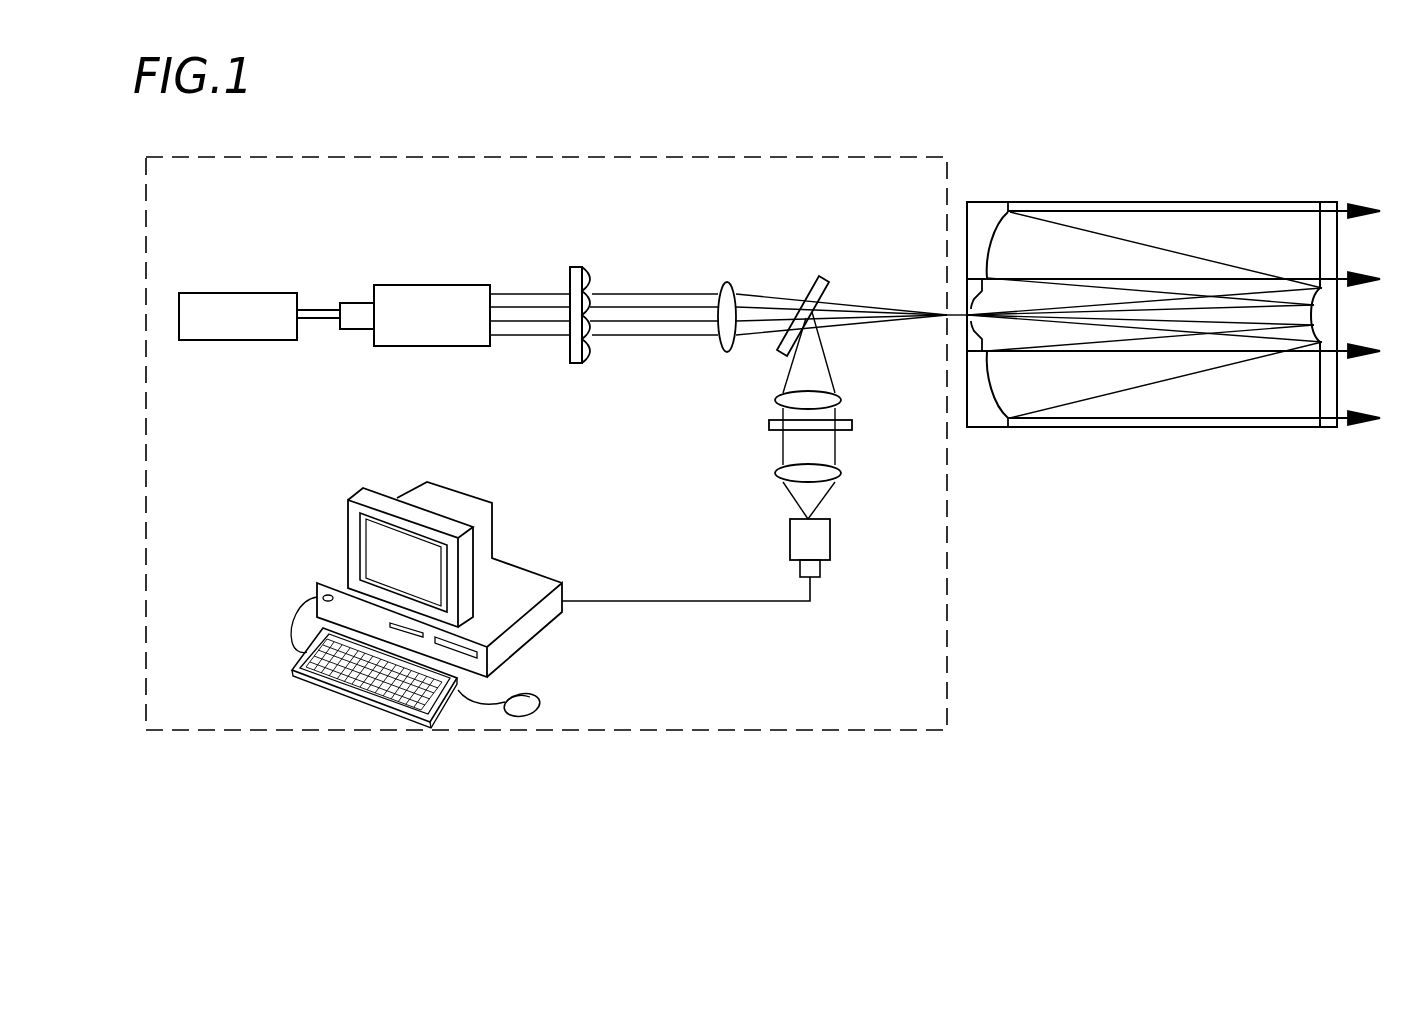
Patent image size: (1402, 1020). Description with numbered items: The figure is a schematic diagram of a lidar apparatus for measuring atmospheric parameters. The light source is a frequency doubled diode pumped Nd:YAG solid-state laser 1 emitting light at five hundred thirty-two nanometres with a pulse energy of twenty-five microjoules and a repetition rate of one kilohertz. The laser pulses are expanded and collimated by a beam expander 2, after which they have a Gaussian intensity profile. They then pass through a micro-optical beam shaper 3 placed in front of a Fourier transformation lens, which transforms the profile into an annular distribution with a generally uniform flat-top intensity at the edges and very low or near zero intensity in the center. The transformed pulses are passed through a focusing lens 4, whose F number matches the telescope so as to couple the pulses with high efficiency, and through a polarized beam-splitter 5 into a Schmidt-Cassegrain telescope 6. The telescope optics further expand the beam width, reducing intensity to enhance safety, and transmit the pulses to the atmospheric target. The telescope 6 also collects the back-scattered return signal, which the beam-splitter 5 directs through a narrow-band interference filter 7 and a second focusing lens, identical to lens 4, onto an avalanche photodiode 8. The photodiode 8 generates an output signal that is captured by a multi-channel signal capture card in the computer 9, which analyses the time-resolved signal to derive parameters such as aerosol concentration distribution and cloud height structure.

The laser 1 is at (234, 293).
The beam expander 2 is at (429, 285).
The beam shaper 3 is at (595, 268).
The focusing lens 4 is at (724, 343).
The polarized beam-splitter 5 is at (821, 278).
The Schmidt-Cassegrain telescope 6 is at (1273, 423).
The narrow-band interference filter 7 is at (770, 422).
The avalanche photodiode 8 is at (830, 540).
The computer 9 is at (483, 542).